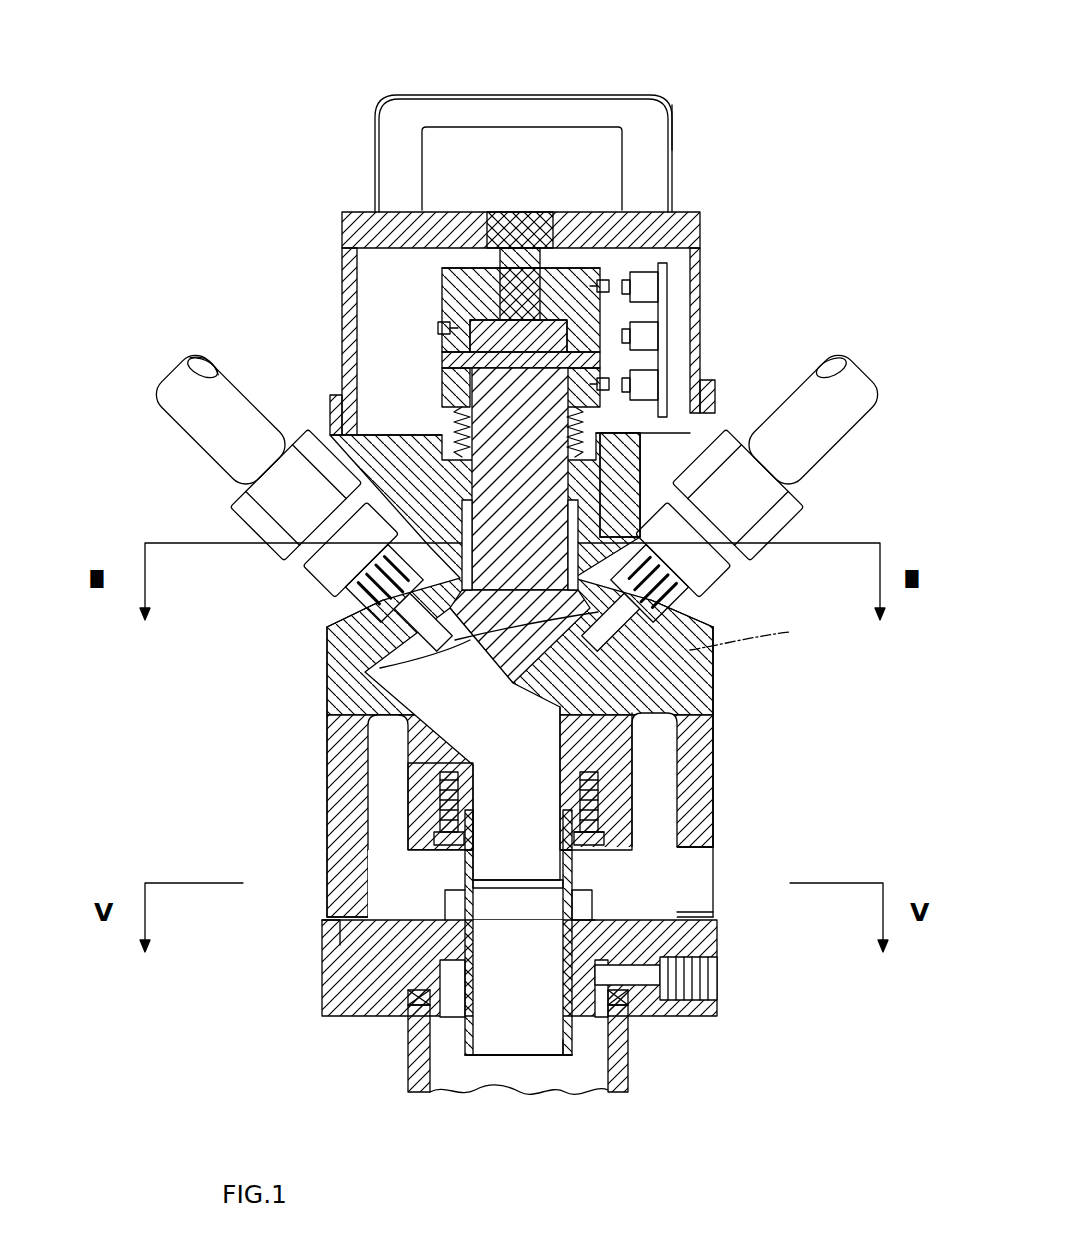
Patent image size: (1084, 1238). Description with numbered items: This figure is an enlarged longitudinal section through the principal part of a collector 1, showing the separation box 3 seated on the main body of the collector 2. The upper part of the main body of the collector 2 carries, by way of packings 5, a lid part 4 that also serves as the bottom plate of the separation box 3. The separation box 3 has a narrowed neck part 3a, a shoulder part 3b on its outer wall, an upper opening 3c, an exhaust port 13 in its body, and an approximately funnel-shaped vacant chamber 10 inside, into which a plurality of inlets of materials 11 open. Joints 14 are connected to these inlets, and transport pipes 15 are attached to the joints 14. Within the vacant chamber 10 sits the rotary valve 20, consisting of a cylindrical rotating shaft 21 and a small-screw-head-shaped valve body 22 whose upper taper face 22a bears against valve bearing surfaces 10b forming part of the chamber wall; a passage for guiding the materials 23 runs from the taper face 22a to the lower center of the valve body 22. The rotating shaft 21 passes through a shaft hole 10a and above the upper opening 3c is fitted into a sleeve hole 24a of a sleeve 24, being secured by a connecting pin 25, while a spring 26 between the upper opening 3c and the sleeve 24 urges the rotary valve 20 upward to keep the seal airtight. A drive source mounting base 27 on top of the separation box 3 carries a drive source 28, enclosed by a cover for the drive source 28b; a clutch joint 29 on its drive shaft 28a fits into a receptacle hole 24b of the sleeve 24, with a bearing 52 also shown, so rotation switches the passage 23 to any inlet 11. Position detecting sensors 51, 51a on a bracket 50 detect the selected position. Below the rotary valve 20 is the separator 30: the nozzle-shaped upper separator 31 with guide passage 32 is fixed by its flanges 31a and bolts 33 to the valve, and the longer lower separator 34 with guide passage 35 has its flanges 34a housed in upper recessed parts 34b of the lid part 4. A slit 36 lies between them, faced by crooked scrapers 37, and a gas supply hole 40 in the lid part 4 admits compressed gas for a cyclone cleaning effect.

The collector 1 is at (650, 88).
The main body of the collector 2 is at (632, 1060).
The separation box 3 is at (715, 805).
The neck part 3a is at (410, 555).
The shoulder part 3b is at (328, 615).
The upper opening 3c is at (340, 415).
The lid part 4 is at (322, 990).
The packings 5 is at (408, 1020).
The vacant chamber 10 is at (690, 752).
The shaft hole 10a is at (650, 495).
The valve bearing surfaces 10b is at (765, 632).
The inlets of materials 11 is at (345, 655).
The exhaust port 13 is at (690, 880).
The joints 14 is at (310, 552).
The transport pipes 15 is at (185, 405).
The rotary valve 20 is at (715, 685).
The rotating shaft 21 is at (462, 417).
The valve body 22 is at (340, 775).
The upper taper face 22a is at (478, 636).
The passage for guiding the materials 23 is at (490, 714).
The sleeve 24 is at (442, 300).
The sleeve hole 24a is at (470, 330).
The receptacle hole 24b is at (500, 285).
The connecting pin 25 is at (442, 362).
The spring 26 is at (705, 400).
The drive source mounting base 27 is at (342, 225).
The drive source 28 is at (581, 137).
The drive shaft 28a is at (545, 215).
The cover for the drive source 28b is at (678, 137).
The clutch joint 29 is at (515, 212).
The separator 30 is at (570, 1060).
The upper separator 31 is at (558, 845).
The flanges of the upper separator 31a is at (600, 836).
The guide passage of the upper separator 32 is at (470, 860).
The bolts 33 is at (440, 850).
The lower separator 34 is at (560, 948).
The flanges of the lower separator 34a is at (328, 945).
The upper recessed parts 34b is at (518, 1056).
The guide passage of the lower separator 35 is at (535, 961).
The slit 36 is at (565, 886).
The scrapers 37 is at (445, 905).
The gas supply hole 40 is at (720, 985).
The bracket 50 is at (668, 380).
The position detecting sensors 51 is at (662, 340).
The position detecting sensor 51a is at (612, 286).
The bearing 52 is at (487, 215).